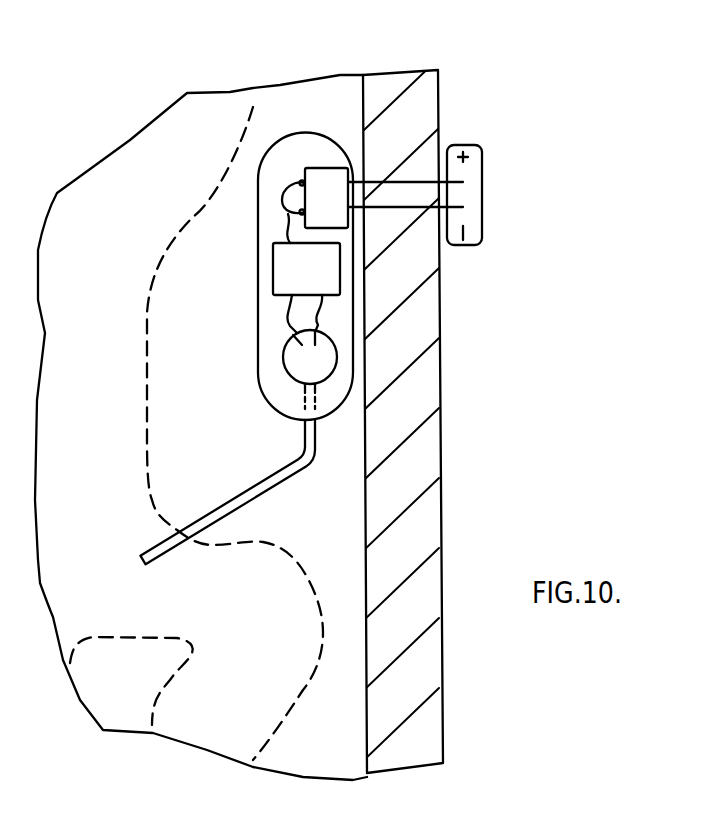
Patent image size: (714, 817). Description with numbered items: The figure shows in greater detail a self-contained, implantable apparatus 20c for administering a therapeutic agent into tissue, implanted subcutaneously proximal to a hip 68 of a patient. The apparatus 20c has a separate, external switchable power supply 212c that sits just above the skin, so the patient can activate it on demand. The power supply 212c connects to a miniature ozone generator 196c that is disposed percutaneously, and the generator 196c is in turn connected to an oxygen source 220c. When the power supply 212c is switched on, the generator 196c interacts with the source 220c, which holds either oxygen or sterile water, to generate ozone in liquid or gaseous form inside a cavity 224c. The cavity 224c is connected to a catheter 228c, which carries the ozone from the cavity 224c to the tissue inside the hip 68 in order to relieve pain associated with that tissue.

The apparatus for administering a therapeutic agent 20c is at (349, 131).
The oxygen source 220c is at (308, 200).
The miniature ozone generator 196c is at (294, 272).
The cavity 224c is at (328, 363).
The catheter 228c is at (245, 492).
The switchable power supply 212c is at (482, 182).
The hip 68 is at (136, 580).